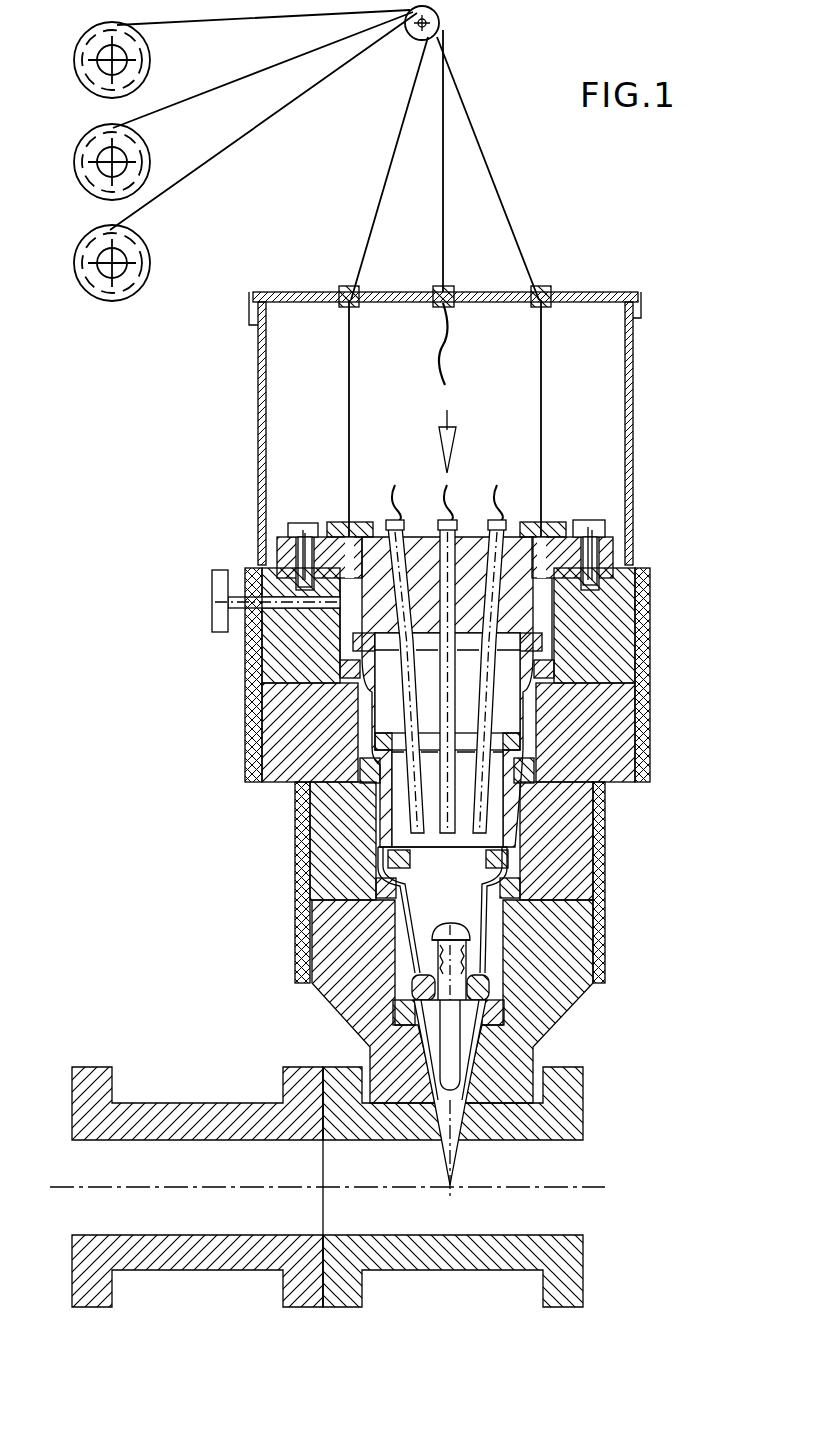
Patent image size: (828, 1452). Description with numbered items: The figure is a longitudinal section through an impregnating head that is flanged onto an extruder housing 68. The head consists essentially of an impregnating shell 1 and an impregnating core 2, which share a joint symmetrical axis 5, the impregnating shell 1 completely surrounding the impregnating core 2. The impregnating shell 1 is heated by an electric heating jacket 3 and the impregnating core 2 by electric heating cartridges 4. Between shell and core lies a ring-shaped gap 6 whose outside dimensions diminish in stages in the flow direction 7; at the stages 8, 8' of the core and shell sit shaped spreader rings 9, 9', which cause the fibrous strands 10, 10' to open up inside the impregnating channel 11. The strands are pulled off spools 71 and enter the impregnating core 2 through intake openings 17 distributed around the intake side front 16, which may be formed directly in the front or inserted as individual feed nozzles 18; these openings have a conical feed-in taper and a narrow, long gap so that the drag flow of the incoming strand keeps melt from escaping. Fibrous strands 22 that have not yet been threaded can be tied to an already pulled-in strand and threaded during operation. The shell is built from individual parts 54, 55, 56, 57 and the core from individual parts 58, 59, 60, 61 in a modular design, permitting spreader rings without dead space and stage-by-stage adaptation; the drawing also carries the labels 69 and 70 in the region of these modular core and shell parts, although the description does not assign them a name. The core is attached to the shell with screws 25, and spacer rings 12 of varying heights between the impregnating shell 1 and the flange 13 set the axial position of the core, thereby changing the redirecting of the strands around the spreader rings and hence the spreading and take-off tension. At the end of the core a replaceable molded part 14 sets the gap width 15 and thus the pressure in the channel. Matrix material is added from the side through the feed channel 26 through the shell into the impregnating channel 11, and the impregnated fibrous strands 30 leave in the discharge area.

The impregnating shell 1 is at (622, 786).
The impregnating core 2 is at (540, 480).
The electric heating jacket 3 is at (645, 755).
The electric heating cartridges 4 is at (497, 512).
The joint symmetrical axis 5 is at (470, 893).
The ring-shaped gap 6 is at (585, 858).
The flow direction 7 is at (457, 438).
The stage 8 is at (280, 861).
The stage 8' is at (237, 882).
The spreader ring 9 is at (262, 713).
The spreader ring 9' is at (271, 786).
The fibrous strand 10 is at (369, 307).
The fibrous strand 10' is at (523, 307).
The impregnating channel 11 is at (553, 640).
The spacer rings 12 is at (606, 553).
The flange 13 is at (605, 538).
The replaceable molded part 14 is at (462, 1027).
The gap width 15 is at (480, 1045).
The intake side front 16 is at (392, 522).
The intake openings 17 is at (347, 522).
The feed nozzles 18 is at (575, 520).
The fibrous strands 22 is at (443, 257).
The screws 25 is at (303, 520).
The feed channel 26 is at (213, 600).
The impregnated fibrous strands 30 is at (458, 1157).
The individual part 54 is at (290, 655).
The individual part 55 is at (290, 712).
The individual part 56 is at (337, 875).
The individual part 57 is at (342, 980).
The individual part 58 is at (363, 612).
The individual part 59 is at (565, 745).
The individual part 60 is at (500, 805).
The individual part 61 is at (555, 907).
The extruder housing 68 is at (570, 1110).
The upper chamber 69 is at (503, 713).
The upper block right 70 is at (575, 685).
The spools 71 is at (137, 58).